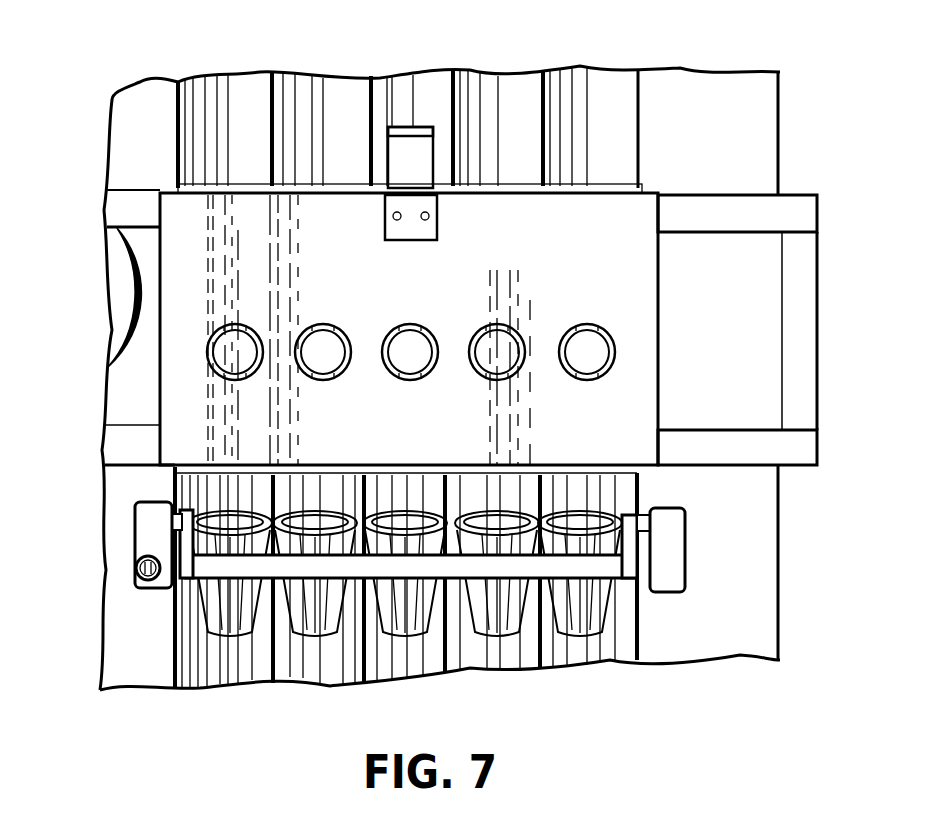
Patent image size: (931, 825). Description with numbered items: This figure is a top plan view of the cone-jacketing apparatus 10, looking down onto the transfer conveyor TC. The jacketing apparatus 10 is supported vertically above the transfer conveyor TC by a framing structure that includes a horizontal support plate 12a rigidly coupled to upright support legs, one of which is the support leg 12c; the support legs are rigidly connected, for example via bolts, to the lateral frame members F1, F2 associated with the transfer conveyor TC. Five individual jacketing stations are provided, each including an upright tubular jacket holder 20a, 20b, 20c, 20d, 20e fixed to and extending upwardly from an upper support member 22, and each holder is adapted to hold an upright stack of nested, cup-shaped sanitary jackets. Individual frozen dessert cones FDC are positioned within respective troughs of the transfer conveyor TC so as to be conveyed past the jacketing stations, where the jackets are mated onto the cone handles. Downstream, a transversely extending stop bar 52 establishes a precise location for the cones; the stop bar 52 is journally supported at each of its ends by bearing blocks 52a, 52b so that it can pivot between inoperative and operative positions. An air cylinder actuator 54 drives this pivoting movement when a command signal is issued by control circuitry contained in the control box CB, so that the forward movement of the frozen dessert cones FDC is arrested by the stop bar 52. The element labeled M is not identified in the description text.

The transfer conveyor TC is at (432, 84).
The control box CB is at (424, 174).
The lateral frame member F2 is at (722, 134).
The upper support member 22 is at (623, 235).
The horizontal support plate 12a is at (750, 223).
The upright support leg 12c is at (797, 322).
The membrane M is at (117, 285).
The jacketing apparatus 10 is at (128, 382).
The upright tubular jacket holder 20a is at (216, 373).
The upright tubular jacket holder 20b is at (345, 330).
The upright tubular jacket holder 20c is at (393, 378).
The upright tubular jacket holder 20d is at (519, 336).
The upright tubular jacket holder 20e is at (580, 378).
The stop bar 52 is at (408, 546).
The bearing block 52a is at (668, 532).
The bearing block 52b is at (143, 520).
The air cylinder actuator 54 is at (140, 570).
The lateral frame member F1 is at (150, 642).
The frozen dessert cones FDC is at (298, 618).